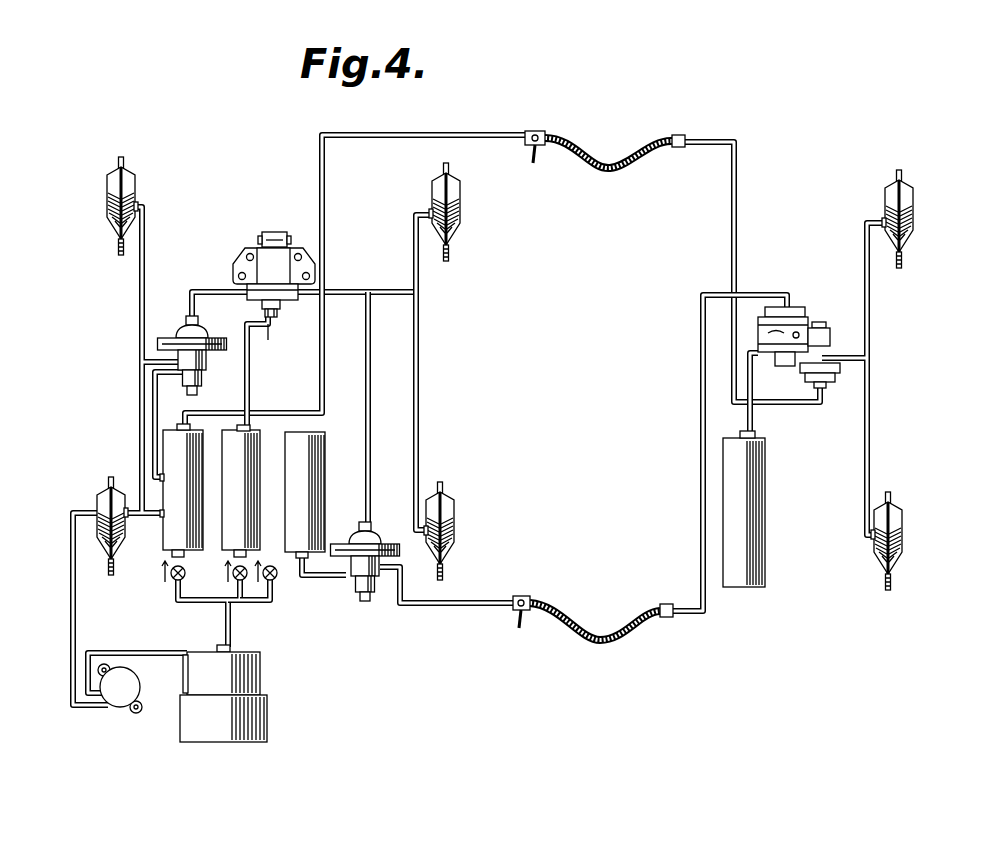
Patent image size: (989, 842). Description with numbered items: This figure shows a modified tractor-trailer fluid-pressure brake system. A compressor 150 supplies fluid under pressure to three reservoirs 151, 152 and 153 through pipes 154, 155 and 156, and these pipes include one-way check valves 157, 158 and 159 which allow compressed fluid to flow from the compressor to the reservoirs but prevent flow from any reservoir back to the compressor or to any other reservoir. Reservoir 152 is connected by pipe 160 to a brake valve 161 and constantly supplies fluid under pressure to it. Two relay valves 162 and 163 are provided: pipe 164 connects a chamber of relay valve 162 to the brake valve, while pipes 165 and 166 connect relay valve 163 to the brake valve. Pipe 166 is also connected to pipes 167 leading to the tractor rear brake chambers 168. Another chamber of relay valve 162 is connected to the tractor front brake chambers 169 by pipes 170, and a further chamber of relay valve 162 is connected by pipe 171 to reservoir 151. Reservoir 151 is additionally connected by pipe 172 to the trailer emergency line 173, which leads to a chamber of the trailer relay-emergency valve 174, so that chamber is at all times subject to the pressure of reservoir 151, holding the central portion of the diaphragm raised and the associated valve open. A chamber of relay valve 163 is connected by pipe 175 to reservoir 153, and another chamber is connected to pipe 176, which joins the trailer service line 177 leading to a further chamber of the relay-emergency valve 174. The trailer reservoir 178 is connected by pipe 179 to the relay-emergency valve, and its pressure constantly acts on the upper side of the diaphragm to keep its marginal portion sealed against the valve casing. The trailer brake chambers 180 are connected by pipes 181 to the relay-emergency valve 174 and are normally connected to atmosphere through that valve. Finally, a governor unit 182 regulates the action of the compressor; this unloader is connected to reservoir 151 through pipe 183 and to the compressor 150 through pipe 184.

The compressor 150 is at (262, 692).
The reservoir 151 is at (172, 440).
The reservoir 152 is at (248, 443).
The reservoir 153 is at (306, 444).
The pipe 154 is at (173, 603).
The pipe 155 is at (236, 604).
The pipe 156 is at (267, 603).
The one-way check valve 157 is at (172, 580).
The one-way check valve 158 is at (236, 580).
The one-way check valve 159 is at (277, 578).
The pipe 160 is at (251, 362).
The brake valve 161 is at (270, 268).
The relay valve 162 is at (212, 342).
The relay valve 163 is at (368, 546).
The pipe 164 is at (205, 280).
The pipe 165 is at (371, 408).
The pipe 166 is at (365, 281).
The pipes 167 is at (419, 324).
The tractor rear brake chambers 168 is at (461, 213).
The tractor front brake chambers 169 is at (108, 207).
The pipes 170 is at (141, 384).
The pipe 171 is at (153, 403).
The pipe 172 is at (324, 375).
The trailer emergency line 173 is at (737, 262).
The trailer relay-emergency valve 174 is at (793, 318).
The pipe 175 is at (342, 580).
The pipe 176 is at (466, 606).
The trailer service line 177 is at (700, 495).
The trailer reservoir 178 is at (757, 534).
The pipe 179 is at (754, 428).
The trailer brake chambers 180 is at (915, 212).
The pipes 181 is at (870, 368).
The governor unit 182 is at (124, 687).
The pipe 183 is at (70, 585).
The pipe 184 is at (156, 647).